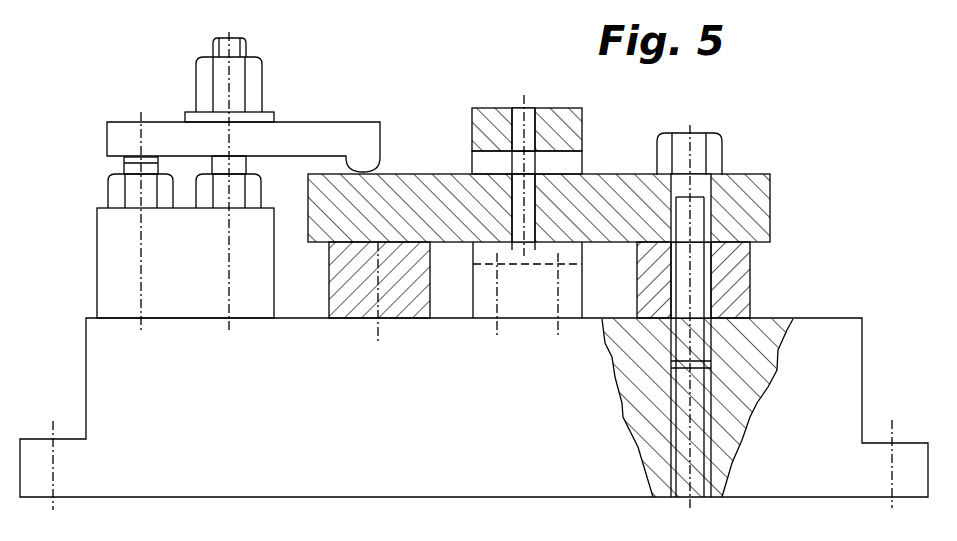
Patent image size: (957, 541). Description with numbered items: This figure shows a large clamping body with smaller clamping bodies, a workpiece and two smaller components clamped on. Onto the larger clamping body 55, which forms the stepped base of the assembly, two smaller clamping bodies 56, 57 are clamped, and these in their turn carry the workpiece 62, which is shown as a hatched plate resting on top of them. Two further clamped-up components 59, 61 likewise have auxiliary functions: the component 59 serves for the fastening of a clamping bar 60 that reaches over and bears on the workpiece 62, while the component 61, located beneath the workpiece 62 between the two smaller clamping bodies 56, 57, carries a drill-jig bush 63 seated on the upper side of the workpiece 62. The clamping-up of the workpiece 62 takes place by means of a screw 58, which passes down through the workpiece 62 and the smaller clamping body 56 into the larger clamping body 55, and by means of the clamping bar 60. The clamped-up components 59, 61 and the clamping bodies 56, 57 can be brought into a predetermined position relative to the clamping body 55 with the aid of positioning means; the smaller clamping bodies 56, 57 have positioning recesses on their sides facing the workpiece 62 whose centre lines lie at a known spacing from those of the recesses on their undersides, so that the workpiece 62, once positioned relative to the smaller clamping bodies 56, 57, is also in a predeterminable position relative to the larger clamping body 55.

The larger clamping body 55 is at (560, 462).
The smaller clamping body 56 is at (735, 270).
The smaller clamping body 57 is at (397, 298).
The screw 58 is at (713, 153).
The clamped-up component 59 is at (110, 240).
The clamping bar 60 is at (163, 132).
The clamped-up component 61 is at (523, 305).
The workpiece 62 is at (424, 183).
The drill-jig bush 63 is at (507, 113).